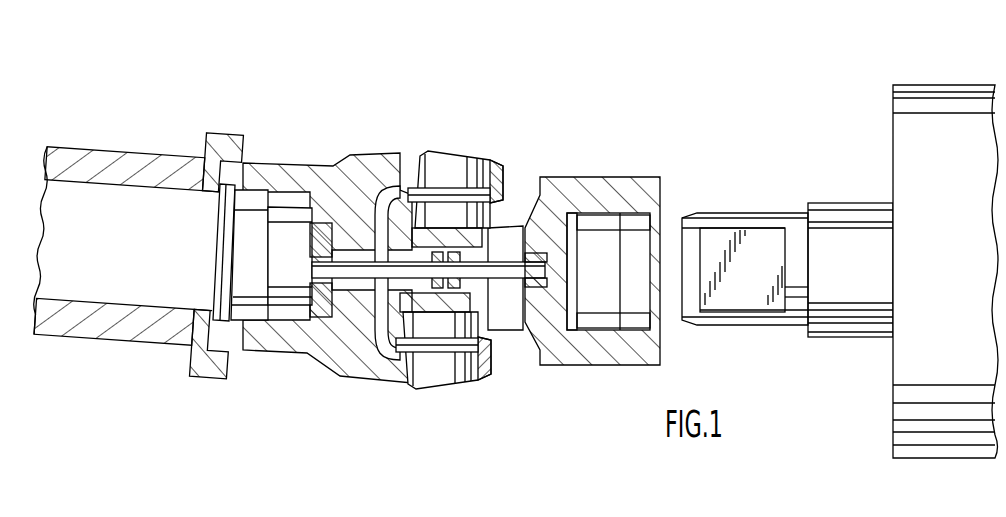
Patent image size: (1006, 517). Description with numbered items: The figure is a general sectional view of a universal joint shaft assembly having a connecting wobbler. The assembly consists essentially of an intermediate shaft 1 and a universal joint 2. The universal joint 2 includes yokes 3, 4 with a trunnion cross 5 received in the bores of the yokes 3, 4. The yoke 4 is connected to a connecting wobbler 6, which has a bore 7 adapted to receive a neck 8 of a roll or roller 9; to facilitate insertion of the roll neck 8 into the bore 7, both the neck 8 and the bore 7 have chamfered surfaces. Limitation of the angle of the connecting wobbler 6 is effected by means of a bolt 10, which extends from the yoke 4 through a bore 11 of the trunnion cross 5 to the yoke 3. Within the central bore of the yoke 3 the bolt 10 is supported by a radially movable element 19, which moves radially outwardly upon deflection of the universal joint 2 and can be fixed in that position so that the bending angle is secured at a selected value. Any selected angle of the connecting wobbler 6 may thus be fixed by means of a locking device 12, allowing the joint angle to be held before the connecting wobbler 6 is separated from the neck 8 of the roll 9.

The intermediate shaft 1 is at (90, 163).
The universal joint 2 is at (459, 92).
The yoke 3 is at (348, 178).
The yoke 4 is at (512, 235).
The trunnion cross 5 is at (452, 323).
The connecting wobbler 6 is at (588, 190).
The bore 7 is at (620, 310).
The neck 8 is at (737, 222).
The roll 9 is at (908, 165).
The bolt 10 is at (510, 330).
The bore 11 is at (416, 293).
The locking device 12 is at (257, 215).
The radially movable element 19 is at (322, 300).